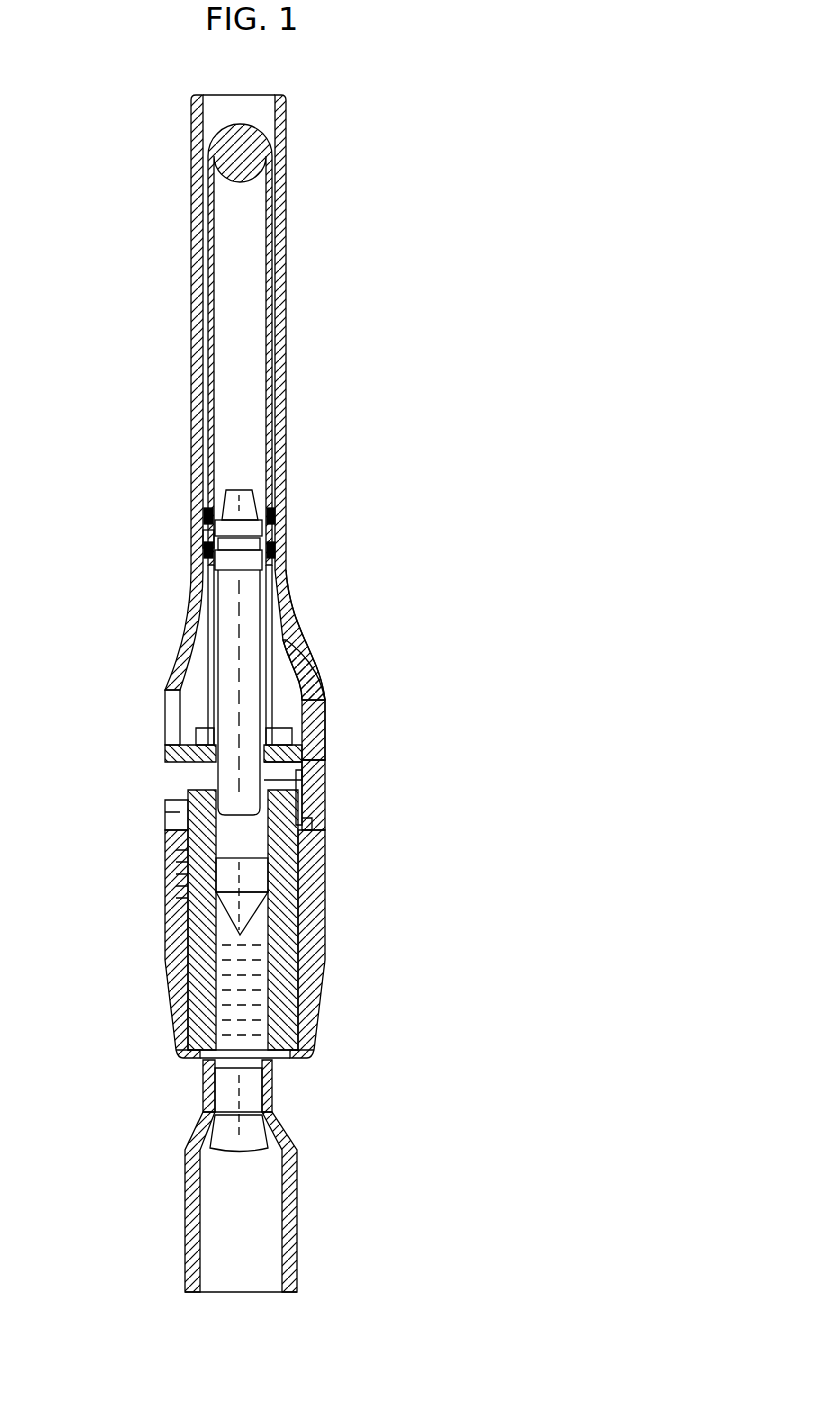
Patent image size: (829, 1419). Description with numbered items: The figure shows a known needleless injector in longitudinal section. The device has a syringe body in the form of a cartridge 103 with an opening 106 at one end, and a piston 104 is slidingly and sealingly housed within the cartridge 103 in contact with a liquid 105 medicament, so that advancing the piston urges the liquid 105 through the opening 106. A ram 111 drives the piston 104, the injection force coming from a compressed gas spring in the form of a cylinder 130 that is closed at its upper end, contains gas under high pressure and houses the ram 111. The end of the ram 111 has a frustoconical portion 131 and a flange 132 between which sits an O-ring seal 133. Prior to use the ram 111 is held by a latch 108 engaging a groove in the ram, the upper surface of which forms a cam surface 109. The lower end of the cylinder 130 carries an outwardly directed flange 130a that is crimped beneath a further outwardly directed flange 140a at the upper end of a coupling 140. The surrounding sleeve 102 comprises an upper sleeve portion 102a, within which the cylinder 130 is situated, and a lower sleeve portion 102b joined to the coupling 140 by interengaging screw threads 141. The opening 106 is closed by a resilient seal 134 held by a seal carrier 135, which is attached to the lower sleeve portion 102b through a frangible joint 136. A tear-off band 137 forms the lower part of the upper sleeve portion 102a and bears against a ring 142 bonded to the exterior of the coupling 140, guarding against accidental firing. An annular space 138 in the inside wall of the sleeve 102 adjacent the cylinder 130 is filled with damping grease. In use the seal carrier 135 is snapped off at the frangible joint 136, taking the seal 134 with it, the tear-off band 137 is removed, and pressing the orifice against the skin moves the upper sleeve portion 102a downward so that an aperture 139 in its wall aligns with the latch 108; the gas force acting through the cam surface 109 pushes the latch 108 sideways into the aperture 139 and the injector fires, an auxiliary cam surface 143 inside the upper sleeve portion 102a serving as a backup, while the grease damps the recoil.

The sleeve 102 is at (320, 628).
The upper sleeve portion 102a is at (300, 660).
The lower sleeve portion 102b is at (168, 915).
The cartridge 103 is at (323, 867).
The piston 104 is at (323, 930).
The liquid 105 is at (263, 1003).
The opening 106 is at (303, 1060).
The latch 108 is at (200, 750).
The cam surface 109 is at (222, 655).
The ram 111 is at (303, 778).
The cylinder 130 is at (290, 250).
The outwardly directed flange 130a is at (300, 745).
The frustoconical portion 131 is at (288, 488).
The flange 132 is at (288, 557).
The O-ring seal 133 is at (288, 537).
The resilient seal 134 is at (287, 1093).
The seal carrier 135 is at (300, 1148).
The frangible joint 136 is at (203, 1072).
The tear-off band 137 is at (167, 818).
The annular space 138 is at (203, 540).
The aperture 139 is at (172, 717).
The coupling 140 is at (300, 807).
The outwardly directed flange 140a is at (325, 720).
The screw threads 141 is at (163, 863).
The ring 142 is at (310, 822).
The auxiliary cam surface 143 is at (303, 660).